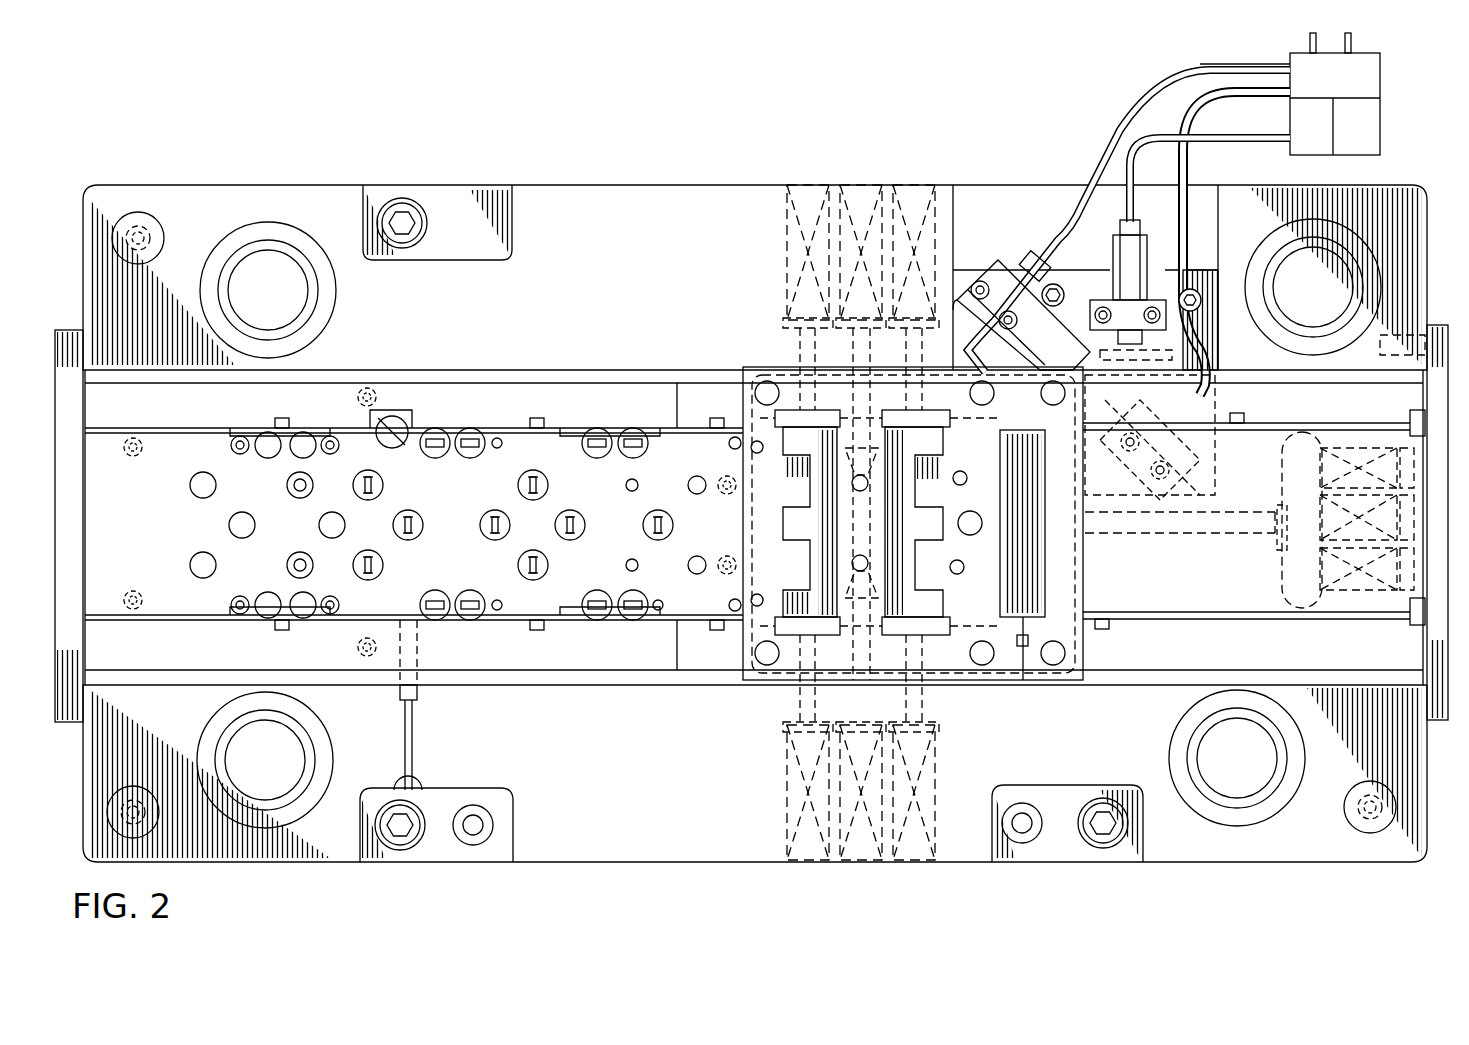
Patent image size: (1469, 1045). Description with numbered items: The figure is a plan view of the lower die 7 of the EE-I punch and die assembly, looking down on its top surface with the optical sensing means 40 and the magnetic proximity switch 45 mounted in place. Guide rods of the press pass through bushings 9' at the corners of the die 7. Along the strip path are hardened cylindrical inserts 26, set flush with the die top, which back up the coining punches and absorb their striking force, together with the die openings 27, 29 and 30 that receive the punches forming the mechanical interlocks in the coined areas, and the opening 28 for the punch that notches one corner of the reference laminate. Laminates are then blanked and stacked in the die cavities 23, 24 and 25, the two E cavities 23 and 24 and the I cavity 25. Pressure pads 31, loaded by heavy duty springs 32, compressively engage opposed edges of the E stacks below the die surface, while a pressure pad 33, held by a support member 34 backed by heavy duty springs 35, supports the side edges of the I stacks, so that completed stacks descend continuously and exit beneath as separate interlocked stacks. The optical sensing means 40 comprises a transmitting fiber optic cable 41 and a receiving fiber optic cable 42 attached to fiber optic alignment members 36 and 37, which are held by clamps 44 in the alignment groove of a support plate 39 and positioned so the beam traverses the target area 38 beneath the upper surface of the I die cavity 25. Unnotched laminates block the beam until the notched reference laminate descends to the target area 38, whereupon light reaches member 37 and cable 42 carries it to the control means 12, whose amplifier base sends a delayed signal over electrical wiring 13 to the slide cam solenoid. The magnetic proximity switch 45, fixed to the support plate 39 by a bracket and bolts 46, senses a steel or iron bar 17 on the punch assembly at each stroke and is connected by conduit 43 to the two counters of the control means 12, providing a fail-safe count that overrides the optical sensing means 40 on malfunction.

The lower die 7 is at (572, 182).
The bushings 9' is at (826, 490).
The control means 12 is at (1385, 75).
The electrical wiring 13 is at (1310, 42).
The steel or iron bar 17 is at (1218, 349).
The die cavity 23 is at (800, 590).
The die cavity 24 is at (945, 590).
The die cavity 25 is at (1000, 604).
The cylindrical inserts 26 is at (303, 445).
The die openings for interlock punches 27 is at (382, 485).
The die opening for corner notching punch 28 is at (398, 430).
The die openings for interlock punches 29 is at (470, 443).
The die openings for interlock punches 30 is at (633, 443).
The pressure pads 31 is at (790, 383).
The heavy duty springs 32 is at (912, 185).
The pressure pad 33 is at (1085, 575).
The support member 34 is at (1275, 520).
The heavy duty springs 35 is at (1350, 450).
The fiber optic alignment member 36 is at (962, 285).
The fiber optic alignment member 37 is at (1112, 535).
The target area 38 is at (1010, 460).
The support plate 39 is at (1210, 270).
The optical sensing means 40 is at (1088, 130).
The fiber optic cable 41 is at (1165, 78).
The fiber optic cable 42 is at (1232, 90).
The conduit 43 is at (1235, 140).
The clamps 44 is at (995, 270).
The magnetic proximity switch 45 is at (1115, 255).
The bracket and bolts 46 is at (1090, 316).